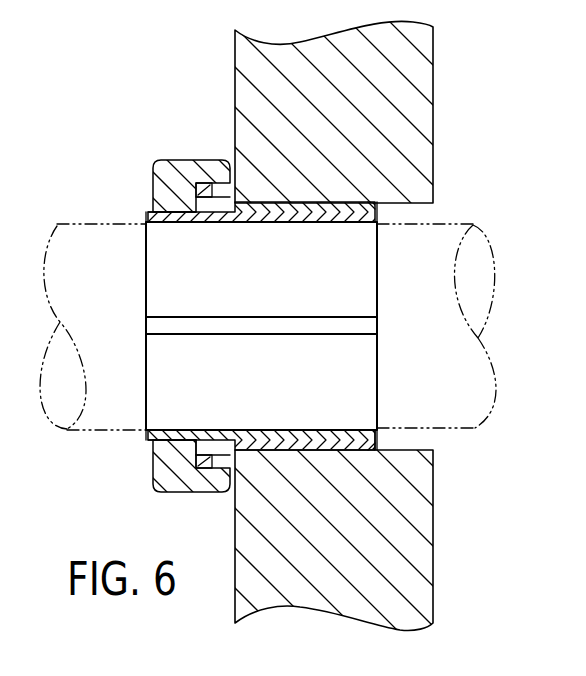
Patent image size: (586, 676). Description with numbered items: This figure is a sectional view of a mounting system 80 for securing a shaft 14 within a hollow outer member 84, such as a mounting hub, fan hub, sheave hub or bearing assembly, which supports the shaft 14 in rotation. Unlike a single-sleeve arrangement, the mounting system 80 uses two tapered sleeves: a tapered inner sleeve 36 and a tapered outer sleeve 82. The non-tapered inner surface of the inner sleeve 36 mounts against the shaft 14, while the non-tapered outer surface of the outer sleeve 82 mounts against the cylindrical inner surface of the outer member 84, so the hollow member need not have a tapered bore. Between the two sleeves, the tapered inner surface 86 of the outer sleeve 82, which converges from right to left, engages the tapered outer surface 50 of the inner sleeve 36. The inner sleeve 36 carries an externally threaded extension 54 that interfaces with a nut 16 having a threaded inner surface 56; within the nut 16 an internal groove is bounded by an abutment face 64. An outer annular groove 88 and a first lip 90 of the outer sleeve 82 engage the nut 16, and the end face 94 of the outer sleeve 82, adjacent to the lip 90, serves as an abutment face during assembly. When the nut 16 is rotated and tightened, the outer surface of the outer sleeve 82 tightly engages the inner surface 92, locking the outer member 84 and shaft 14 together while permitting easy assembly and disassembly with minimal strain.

The mounting system 80 is at (130, 68).
The outer member 84 is at (407, 92).
The tapered inner surface 86 is at (362, 450).
The tapered outer sleeve 82 is at (353, 212).
The tapered outer surface 50 is at (300, 440).
The tapered inner sleeve 36 is at (343, 224).
The shaft 14 is at (58, 247).
The nut 16 is at (163, 182).
The threaded extension 54 is at (175, 493).
The abutment face 64 is at (208, 197).
The outer annular groove 88 is at (218, 493).
The end face 94 is at (168, 224).
The threaded inner surface 56 is at (168, 437).
The first lip 90 is at (205, 440).
The inner surface 92 is at (405, 448).